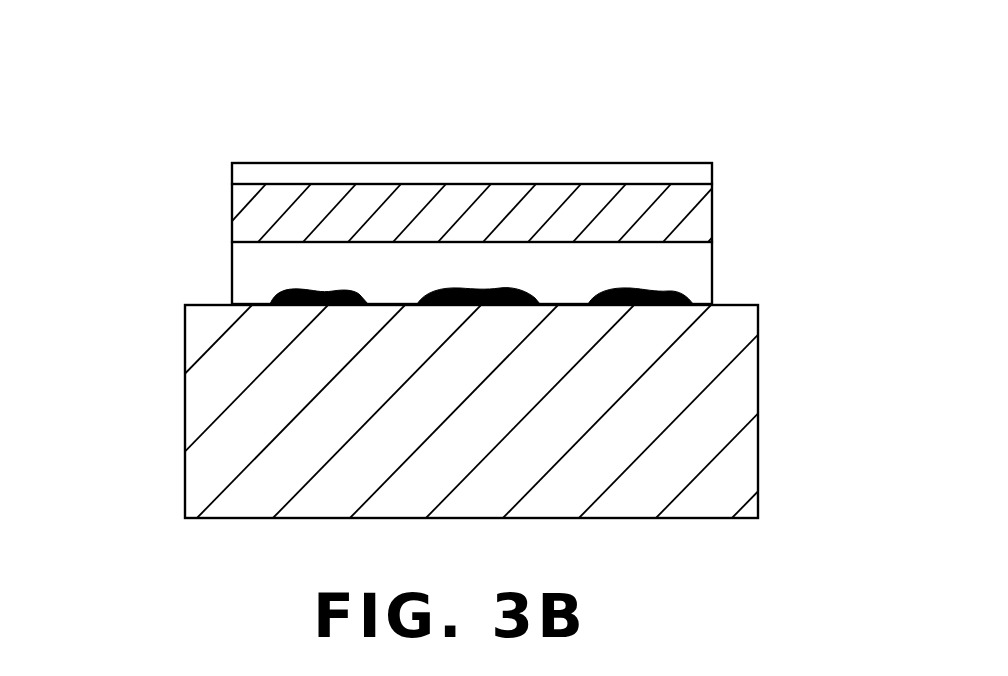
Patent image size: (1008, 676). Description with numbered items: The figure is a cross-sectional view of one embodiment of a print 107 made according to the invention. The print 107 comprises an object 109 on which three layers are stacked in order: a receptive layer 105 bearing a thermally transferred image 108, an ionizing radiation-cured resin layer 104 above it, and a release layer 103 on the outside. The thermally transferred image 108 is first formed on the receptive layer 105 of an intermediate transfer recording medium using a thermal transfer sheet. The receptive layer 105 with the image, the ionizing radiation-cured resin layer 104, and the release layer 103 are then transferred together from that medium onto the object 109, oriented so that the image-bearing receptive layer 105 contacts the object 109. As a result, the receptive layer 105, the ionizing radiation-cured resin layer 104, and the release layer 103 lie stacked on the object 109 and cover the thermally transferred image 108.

The release layer 103 is at (717, 168).
The ionizing radiation-cured resin layer 104 is at (703, 222).
The receptive layer 105 is at (703, 275).
The print 107 is at (583, 153).
The thermally transferred image 108 is at (292, 289).
The object 109 is at (742, 400).